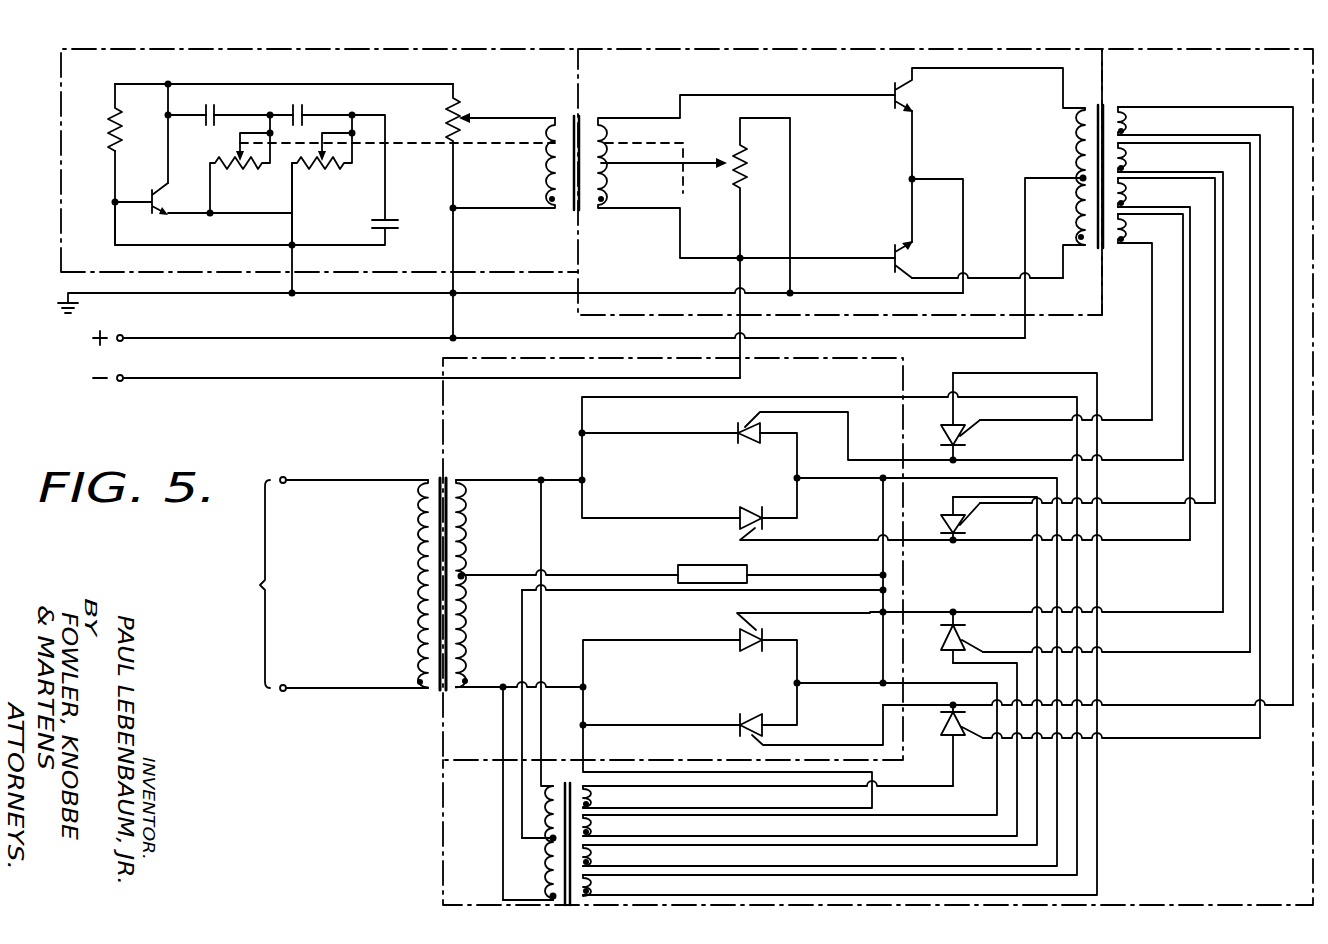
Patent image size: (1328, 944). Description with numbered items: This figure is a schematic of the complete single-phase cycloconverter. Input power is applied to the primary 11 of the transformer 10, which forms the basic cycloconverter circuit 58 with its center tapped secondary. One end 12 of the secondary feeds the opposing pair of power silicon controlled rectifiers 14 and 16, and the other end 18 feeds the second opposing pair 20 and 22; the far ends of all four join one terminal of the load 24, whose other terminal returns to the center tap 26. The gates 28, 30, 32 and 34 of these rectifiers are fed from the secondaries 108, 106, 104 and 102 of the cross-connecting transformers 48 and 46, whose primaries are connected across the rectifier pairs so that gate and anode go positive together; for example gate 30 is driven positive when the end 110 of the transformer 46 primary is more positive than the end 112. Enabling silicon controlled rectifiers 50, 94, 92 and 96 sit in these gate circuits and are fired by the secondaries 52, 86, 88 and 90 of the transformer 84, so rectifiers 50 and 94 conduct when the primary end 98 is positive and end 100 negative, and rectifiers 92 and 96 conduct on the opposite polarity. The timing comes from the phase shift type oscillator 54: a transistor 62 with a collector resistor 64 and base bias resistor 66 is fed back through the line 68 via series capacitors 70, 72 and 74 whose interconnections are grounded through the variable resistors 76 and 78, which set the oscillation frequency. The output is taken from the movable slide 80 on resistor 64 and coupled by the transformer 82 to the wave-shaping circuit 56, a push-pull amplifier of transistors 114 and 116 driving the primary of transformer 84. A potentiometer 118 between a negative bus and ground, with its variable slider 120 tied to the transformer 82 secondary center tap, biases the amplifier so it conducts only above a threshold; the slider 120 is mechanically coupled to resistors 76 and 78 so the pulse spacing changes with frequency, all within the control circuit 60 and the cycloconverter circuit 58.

The transformer 10 is at (438, 480).
The primary 11 is at (329, 584).
The end of secondary winding 12 is at (460, 480).
The power silicon controlled rectifier 14 is at (748, 445).
The power silicon controlled rectifier 16 is at (738, 514).
The end of secondary winding 18 is at (455, 690).
The power silicon controlled rectifier 20 is at (738, 650).
The power silicon controlled rectifier 22 is at (750, 714).
The load 24 is at (735, 565).
The center tap 26 is at (466, 575).
The gate 28 is at (750, 412).
The gate 30 is at (740, 540).
The gate 32 is at (735, 622).
The gate 34 is at (750, 749).
The transformer 46 is at (608, 897).
The transformer 48 is at (571, 771).
The enabling silicon controlled rectifier 50 is at (940, 524).
The transformer secondary 52 is at (1128, 195).
The phase shift type oscillator 54 is at (301, 46).
The wave-shaping circuit 56 is at (866, 48).
The basic cycloconverter circuit 58 is at (443, 423).
The control circuit 60 is at (1250, 48).
The transistor 62 is at (160, 188).
The resistor 64 is at (450, 118).
The resistor 66 is at (111, 123).
The line 68 is at (115, 226).
The capacitor 70 is at (212, 99).
The capacitor 72 is at (299, 99).
The capacitor 74 is at (398, 228).
The variable resistor 76 is at (240, 174).
The variable resistor 78 is at (322, 174).
The movable slide 80 is at (484, 109).
The transformer 82 is at (587, 109).
The transformer 84 is at (1109, 113).
The transformer secondary 86 is at (1128, 161).
The transformer secondary 88 is at (1128, 124).
The transformer secondary 90 is at (1128, 230).
The enabling silicon controlled rectifier 92 is at (940, 436).
The enabling silicon controlled rectifier 94 is at (940, 641).
The enabling silicon controlled rectifier 96 is at (940, 729).
The end of primary 98 is at (1091, 107).
The end of primary 100 is at (1075, 256).
The transformer secondary 102 is at (589, 800).
The transformer secondary 104 is at (589, 829).
The transformer secondary 106 is at (589, 858).
The transformer secondary 108 is at (589, 887).
The end of primary 110 is at (548, 845).
The end of primary 112 is at (550, 896).
The transistor 114 is at (893, 108).
The transistor 116 is at (893, 250).
The potentiometer 118 is at (742, 176).
The variable slider 120 is at (729, 161).